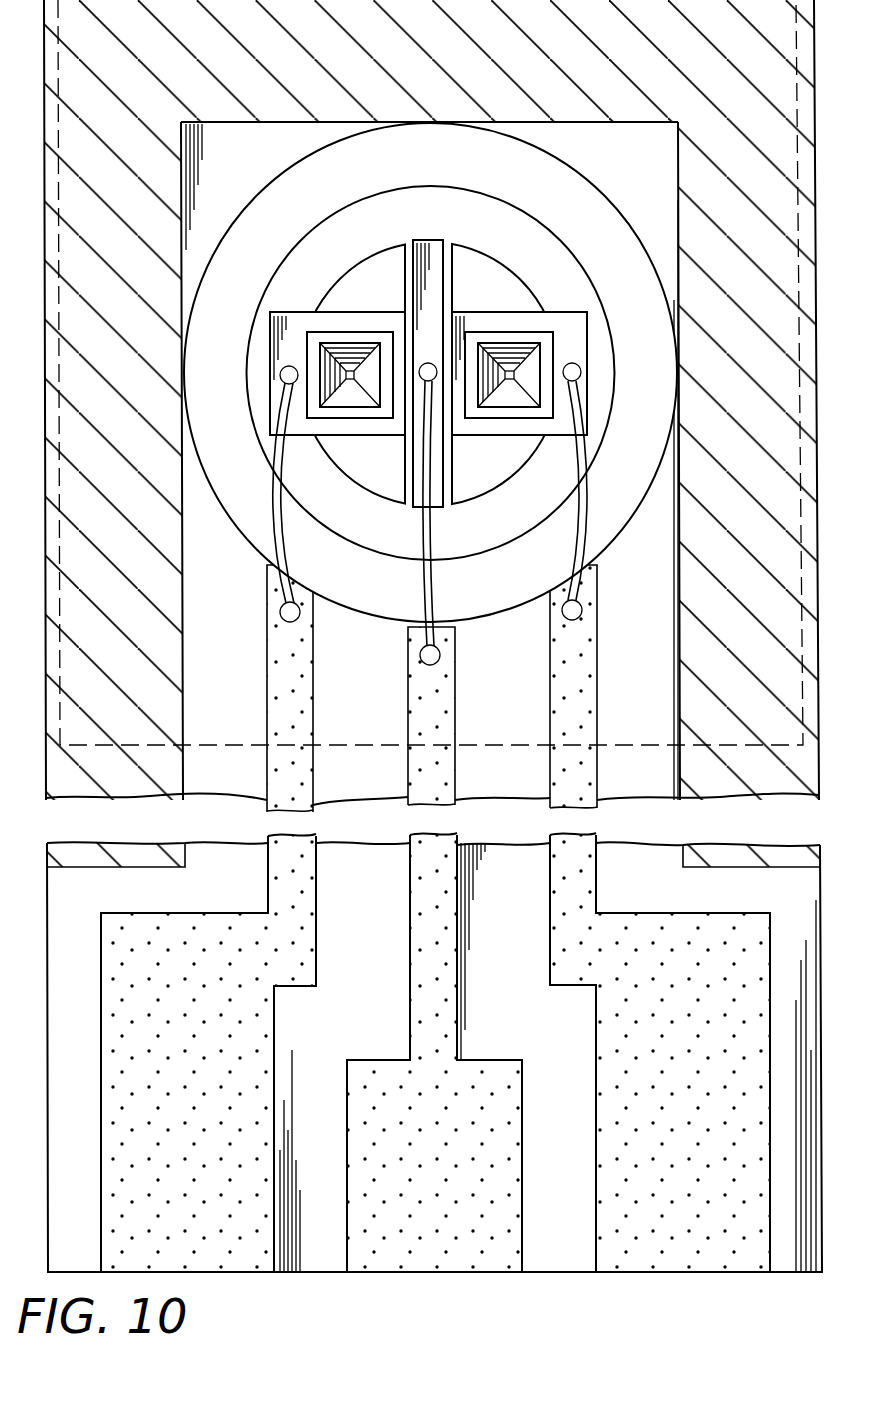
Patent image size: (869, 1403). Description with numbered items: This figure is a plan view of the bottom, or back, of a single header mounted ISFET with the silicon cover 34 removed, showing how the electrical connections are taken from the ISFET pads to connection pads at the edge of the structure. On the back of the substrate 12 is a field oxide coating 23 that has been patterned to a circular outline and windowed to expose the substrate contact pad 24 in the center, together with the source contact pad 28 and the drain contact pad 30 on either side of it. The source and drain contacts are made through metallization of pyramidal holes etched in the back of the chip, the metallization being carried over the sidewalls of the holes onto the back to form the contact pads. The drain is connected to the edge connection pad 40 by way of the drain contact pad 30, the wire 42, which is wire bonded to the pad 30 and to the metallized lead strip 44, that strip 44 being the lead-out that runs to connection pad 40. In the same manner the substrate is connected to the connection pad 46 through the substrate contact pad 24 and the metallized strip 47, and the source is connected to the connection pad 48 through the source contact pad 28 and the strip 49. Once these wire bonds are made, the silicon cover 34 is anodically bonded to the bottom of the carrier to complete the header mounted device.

The substrate 12 is at (650, 463).
The field oxide coating 23 is at (598, 406).
The substrate contact pad 24 is at (423, 242).
The source contact pad 28 is at (508, 283).
The drain contact pad 30 is at (377, 453).
The silicon cover 34 is at (704, 766).
The connection pad 40 is at (253, 1260).
The wire 42 is at (290, 545).
The metallized lead strip 44 is at (298, 730).
The connection pad 46 is at (470, 1260).
The metallized strip 47 is at (415, 694).
The connection pad 48 is at (678, 1262).
The metallized strip 49 is at (556, 698).